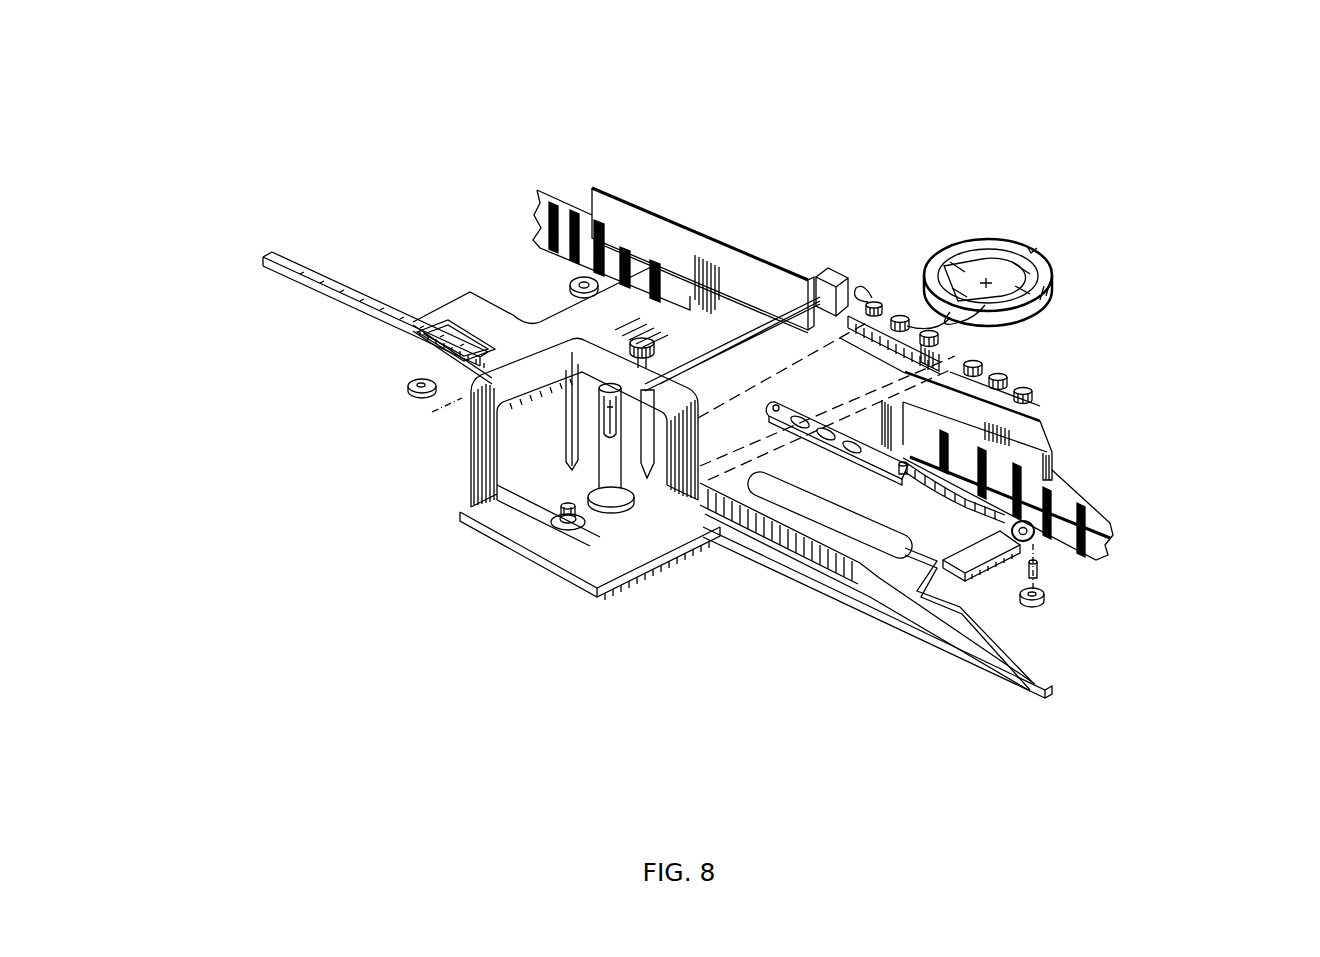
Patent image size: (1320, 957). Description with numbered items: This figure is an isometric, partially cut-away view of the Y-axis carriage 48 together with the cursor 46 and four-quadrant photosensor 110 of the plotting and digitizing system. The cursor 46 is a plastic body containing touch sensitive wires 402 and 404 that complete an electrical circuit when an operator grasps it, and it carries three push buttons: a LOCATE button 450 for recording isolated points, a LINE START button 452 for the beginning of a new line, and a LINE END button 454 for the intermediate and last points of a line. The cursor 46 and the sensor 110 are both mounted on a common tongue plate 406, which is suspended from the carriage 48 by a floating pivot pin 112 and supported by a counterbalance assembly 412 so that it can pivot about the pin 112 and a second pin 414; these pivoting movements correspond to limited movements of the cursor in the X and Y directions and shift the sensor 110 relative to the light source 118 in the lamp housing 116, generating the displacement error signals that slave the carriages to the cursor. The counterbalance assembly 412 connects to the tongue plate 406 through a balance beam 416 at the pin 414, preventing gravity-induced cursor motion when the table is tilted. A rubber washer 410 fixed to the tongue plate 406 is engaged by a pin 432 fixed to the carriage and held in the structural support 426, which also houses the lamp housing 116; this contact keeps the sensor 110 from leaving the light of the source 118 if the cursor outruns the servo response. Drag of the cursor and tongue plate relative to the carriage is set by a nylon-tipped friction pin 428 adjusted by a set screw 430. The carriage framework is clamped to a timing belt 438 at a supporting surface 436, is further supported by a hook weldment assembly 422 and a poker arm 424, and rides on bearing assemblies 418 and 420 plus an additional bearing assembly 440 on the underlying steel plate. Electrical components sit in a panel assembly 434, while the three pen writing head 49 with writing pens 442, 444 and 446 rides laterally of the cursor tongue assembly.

The cursor 46 is at (1055, 293).
The Y-axis carriage 48 is at (186, 137).
The three pen writing head 49 is at (1048, 402).
The four quadrant sensor 110 is at (595, 513).
The floating pivot pin 112 is at (785, 405).
The lamp housing 116 is at (598, 380).
The light source 118 is at (611, 428).
The touch sensitive wire 402 is at (1047, 249).
The touch sensitive wire 404 is at (1020, 240).
The tongue plate 406 is at (503, 527).
The rubber washer 410 is at (557, 533).
The counterbalance assembly 412 is at (1043, 694).
The pin 414 is at (903, 477).
The balance beam 416 is at (866, 466).
The bearing assembly 418 is at (403, 388).
The bearing assembly 420 is at (572, 280).
The hook weldment assembly 422 is at (288, 250).
The poker arm 424 is at (990, 654).
The structural support 426 is at (530, 450).
The friction pin 428 is at (651, 462).
The set screw 430 is at (636, 330).
The pin 432 is at (553, 537).
The panel assembly 434 is at (702, 207).
The supporting surface 436 is at (737, 272).
The timing belt 438 is at (538, 186).
The bearing assembly 440 is at (1043, 547).
The writing pen 442 is at (1047, 425).
The writing pen 444 is at (992, 364).
The writing pen 446 is at (1022, 383).
The LOCATE button 450 is at (880, 306).
The LINE START button 452 is at (900, 312).
The LINE END button 454 is at (944, 346).